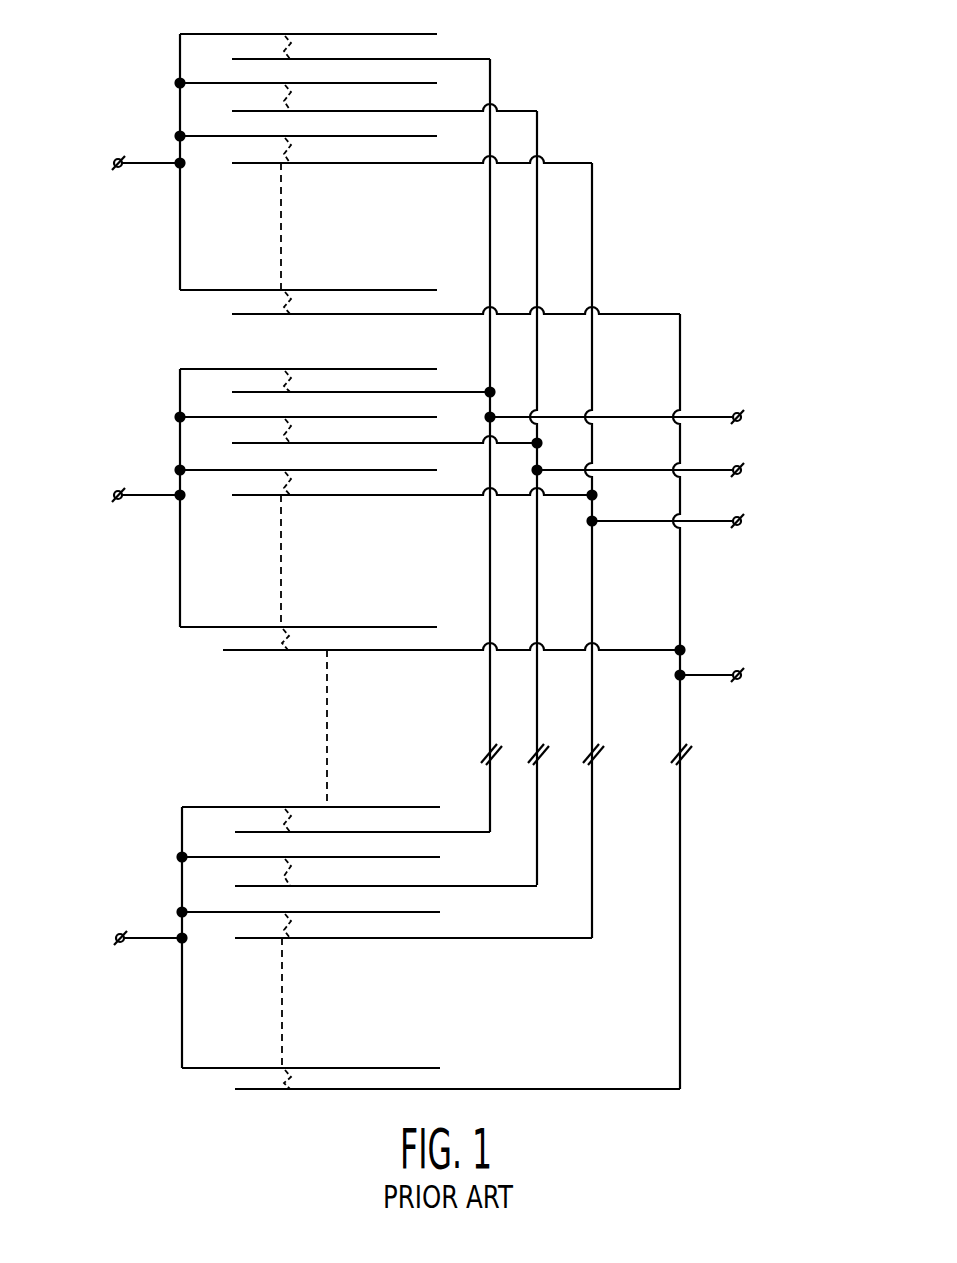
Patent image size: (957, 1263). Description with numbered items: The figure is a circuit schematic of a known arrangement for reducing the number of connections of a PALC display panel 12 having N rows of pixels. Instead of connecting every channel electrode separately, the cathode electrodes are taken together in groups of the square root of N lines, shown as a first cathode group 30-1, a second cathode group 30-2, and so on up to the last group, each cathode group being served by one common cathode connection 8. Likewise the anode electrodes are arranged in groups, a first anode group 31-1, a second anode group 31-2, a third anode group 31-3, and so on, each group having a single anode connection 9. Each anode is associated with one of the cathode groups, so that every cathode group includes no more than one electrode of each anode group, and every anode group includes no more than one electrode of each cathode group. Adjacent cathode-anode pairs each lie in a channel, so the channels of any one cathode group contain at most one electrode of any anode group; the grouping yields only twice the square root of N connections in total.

The cathode group connection 8 is at (121, 169).
The anode group connection 9 is at (742, 413).
The PALC display panel 12 is at (150, 322).
The first cathode group 30-1 is at (323, 34).
The second cathode group 30-2 is at (255, 368).
The first anode group 31-1 is at (457, 59).
The second anode group 31-2 is at (468, 111).
The third anode group 31-3 is at (567, 163).